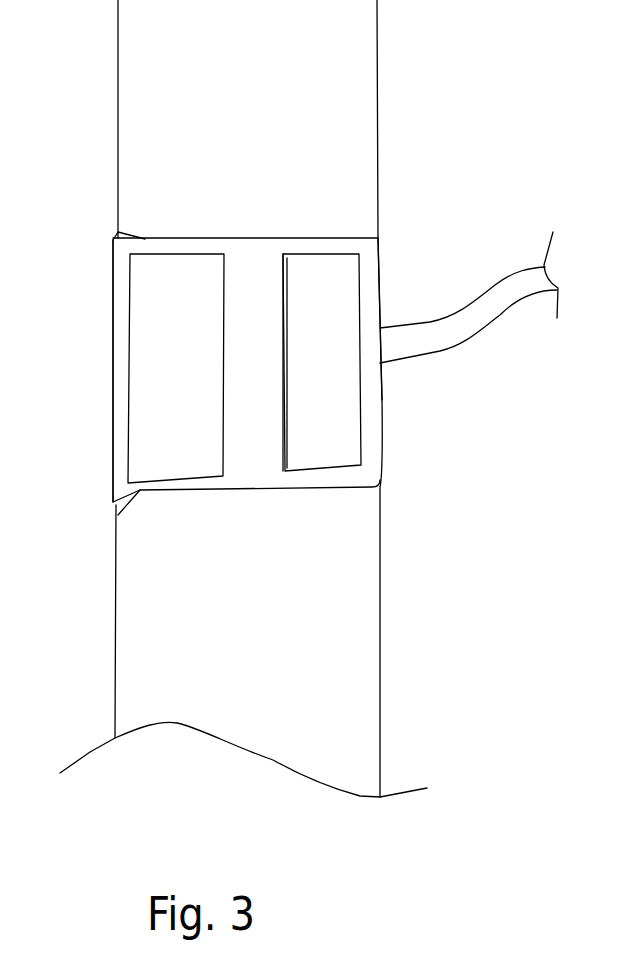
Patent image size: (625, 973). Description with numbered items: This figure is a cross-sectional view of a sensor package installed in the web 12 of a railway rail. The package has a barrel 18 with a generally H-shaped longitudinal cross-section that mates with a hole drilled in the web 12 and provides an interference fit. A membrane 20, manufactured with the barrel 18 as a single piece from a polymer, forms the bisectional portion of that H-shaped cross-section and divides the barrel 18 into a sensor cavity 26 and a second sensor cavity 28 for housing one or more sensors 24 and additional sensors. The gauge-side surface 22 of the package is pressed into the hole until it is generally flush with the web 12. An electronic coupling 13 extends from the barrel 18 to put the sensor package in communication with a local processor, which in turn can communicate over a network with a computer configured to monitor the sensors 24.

The web 12 is at (243, 398).
The electronic coupling 13 is at (480, 330).
The barrel 18 is at (120, 268).
The membrane 20 is at (250, 265).
The gauge-side surface 22 is at (380, 283).
The sensors 24 is at (288, 330).
The sensor cavity 26 is at (334, 404).
The second sensor cavity 28 is at (190, 404).